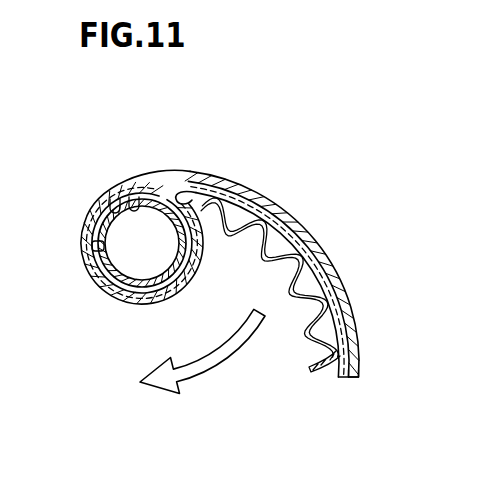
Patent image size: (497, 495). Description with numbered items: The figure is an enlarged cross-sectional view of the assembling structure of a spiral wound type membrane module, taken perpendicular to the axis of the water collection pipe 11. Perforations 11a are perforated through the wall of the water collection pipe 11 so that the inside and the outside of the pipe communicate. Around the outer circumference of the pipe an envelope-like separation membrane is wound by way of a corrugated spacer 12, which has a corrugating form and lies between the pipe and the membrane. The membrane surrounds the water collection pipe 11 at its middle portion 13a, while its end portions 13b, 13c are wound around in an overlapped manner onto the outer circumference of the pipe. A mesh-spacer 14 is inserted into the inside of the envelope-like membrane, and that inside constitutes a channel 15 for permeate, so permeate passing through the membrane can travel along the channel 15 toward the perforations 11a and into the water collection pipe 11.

The water collection pipe 11 is at (134, 280).
The perforations 11a is at (122, 198).
The corrugated spacer 12 is at (300, 307).
The middle portion of the separation membrane 13a is at (202, 258).
The end portion of the separation membrane 13b is at (337, 372).
The end portion of the separation membrane 13c is at (359, 366).
The mesh-spacer 14 is at (281, 218).
The channel for permeate 15 is at (165, 188).